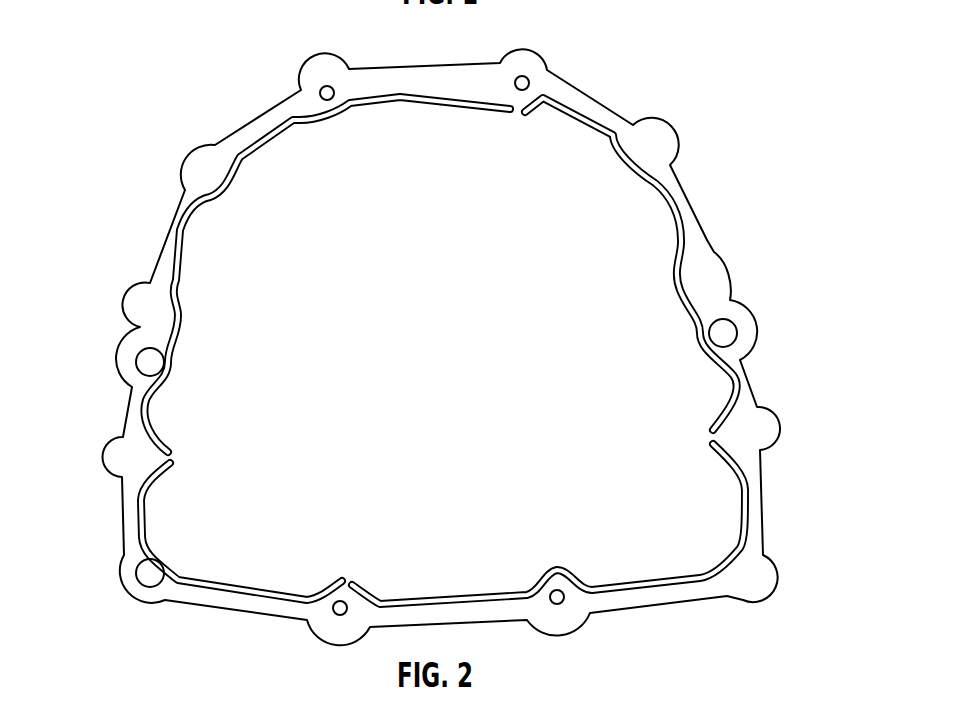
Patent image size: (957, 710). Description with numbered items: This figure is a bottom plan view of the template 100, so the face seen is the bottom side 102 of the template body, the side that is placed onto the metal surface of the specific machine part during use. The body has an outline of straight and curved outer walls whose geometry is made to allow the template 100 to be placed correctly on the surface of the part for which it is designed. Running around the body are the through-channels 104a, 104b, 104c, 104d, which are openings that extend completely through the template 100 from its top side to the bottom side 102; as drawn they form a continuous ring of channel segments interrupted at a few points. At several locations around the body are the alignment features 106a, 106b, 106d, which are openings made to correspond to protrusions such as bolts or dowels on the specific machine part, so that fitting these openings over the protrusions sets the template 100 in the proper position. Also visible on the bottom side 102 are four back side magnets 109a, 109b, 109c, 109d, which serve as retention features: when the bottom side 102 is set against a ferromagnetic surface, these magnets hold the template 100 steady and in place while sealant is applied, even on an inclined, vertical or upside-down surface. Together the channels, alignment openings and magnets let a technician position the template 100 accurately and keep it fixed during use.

The template 100 is at (712, 56).
The bottom side 102 is at (423, 362).
The through-channel 104a is at (680, 207).
The through-channel 104b is at (273, 123).
The through-channel 104c is at (138, 527).
The through-channel 104d is at (750, 512).
The alignment feature 106a is at (725, 330).
The alignment feature 106b is at (138, 358).
The alignment feature 106d is at (150, 575).
The back side magnet 109a is at (528, 78).
The back side magnet 109b is at (320, 87).
The back side magnet 109c is at (343, 600).
The back side magnet 109d is at (562, 589).